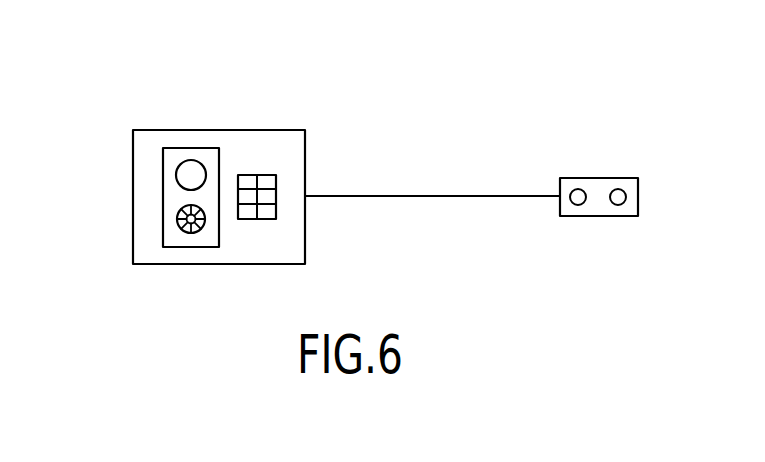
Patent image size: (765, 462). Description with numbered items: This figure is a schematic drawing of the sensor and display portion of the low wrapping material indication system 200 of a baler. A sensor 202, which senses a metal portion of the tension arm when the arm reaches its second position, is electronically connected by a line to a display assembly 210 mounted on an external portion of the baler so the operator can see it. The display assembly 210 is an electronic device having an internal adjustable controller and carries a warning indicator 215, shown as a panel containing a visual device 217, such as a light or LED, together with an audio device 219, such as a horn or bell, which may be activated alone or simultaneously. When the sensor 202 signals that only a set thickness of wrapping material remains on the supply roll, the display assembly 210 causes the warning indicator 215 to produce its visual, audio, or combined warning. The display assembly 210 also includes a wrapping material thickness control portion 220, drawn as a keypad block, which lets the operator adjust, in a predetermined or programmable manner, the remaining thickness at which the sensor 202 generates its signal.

The low wrapping material indication system 200 is at (482, 119).
The sensor 202 is at (598, 178).
The display assembly 210 is at (305, 149).
The warning indicator 215 is at (163, 196).
The visual device 217 is at (191, 160).
The audio device 219 is at (191, 233).
The wrapping material thickness control portion 220 is at (257, 219).